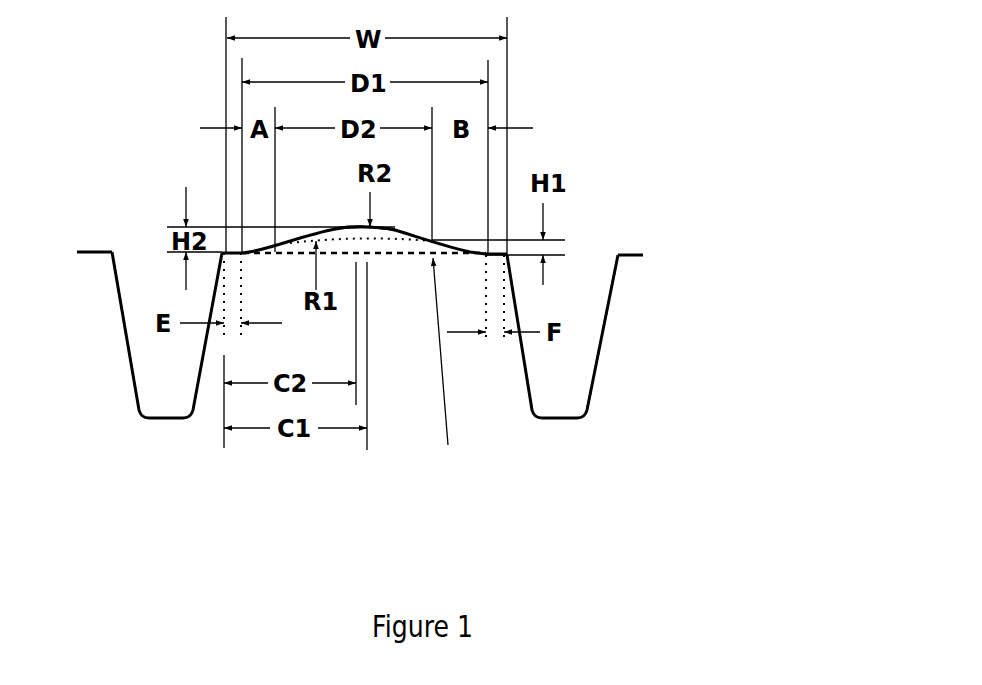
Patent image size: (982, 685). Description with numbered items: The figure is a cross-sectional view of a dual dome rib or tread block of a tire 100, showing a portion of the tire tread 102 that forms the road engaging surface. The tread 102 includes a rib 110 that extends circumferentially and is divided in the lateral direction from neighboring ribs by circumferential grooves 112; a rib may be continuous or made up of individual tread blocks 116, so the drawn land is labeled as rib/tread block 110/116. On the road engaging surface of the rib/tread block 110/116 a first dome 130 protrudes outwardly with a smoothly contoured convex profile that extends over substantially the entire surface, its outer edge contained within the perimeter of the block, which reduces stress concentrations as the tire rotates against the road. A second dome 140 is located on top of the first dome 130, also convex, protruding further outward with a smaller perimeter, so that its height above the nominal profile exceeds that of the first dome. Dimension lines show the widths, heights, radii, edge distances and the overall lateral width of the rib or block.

The tire 100 is at (752, 73).
The tire tread 102 is at (585, 158).
The rib 110 is at (387, 343).
The circumferential groove 112 is at (137, 280).
The tread block 116 is at (70, 414).
The first dome 130 is at (460, 242).
The second dome 140 is at (327, 227).